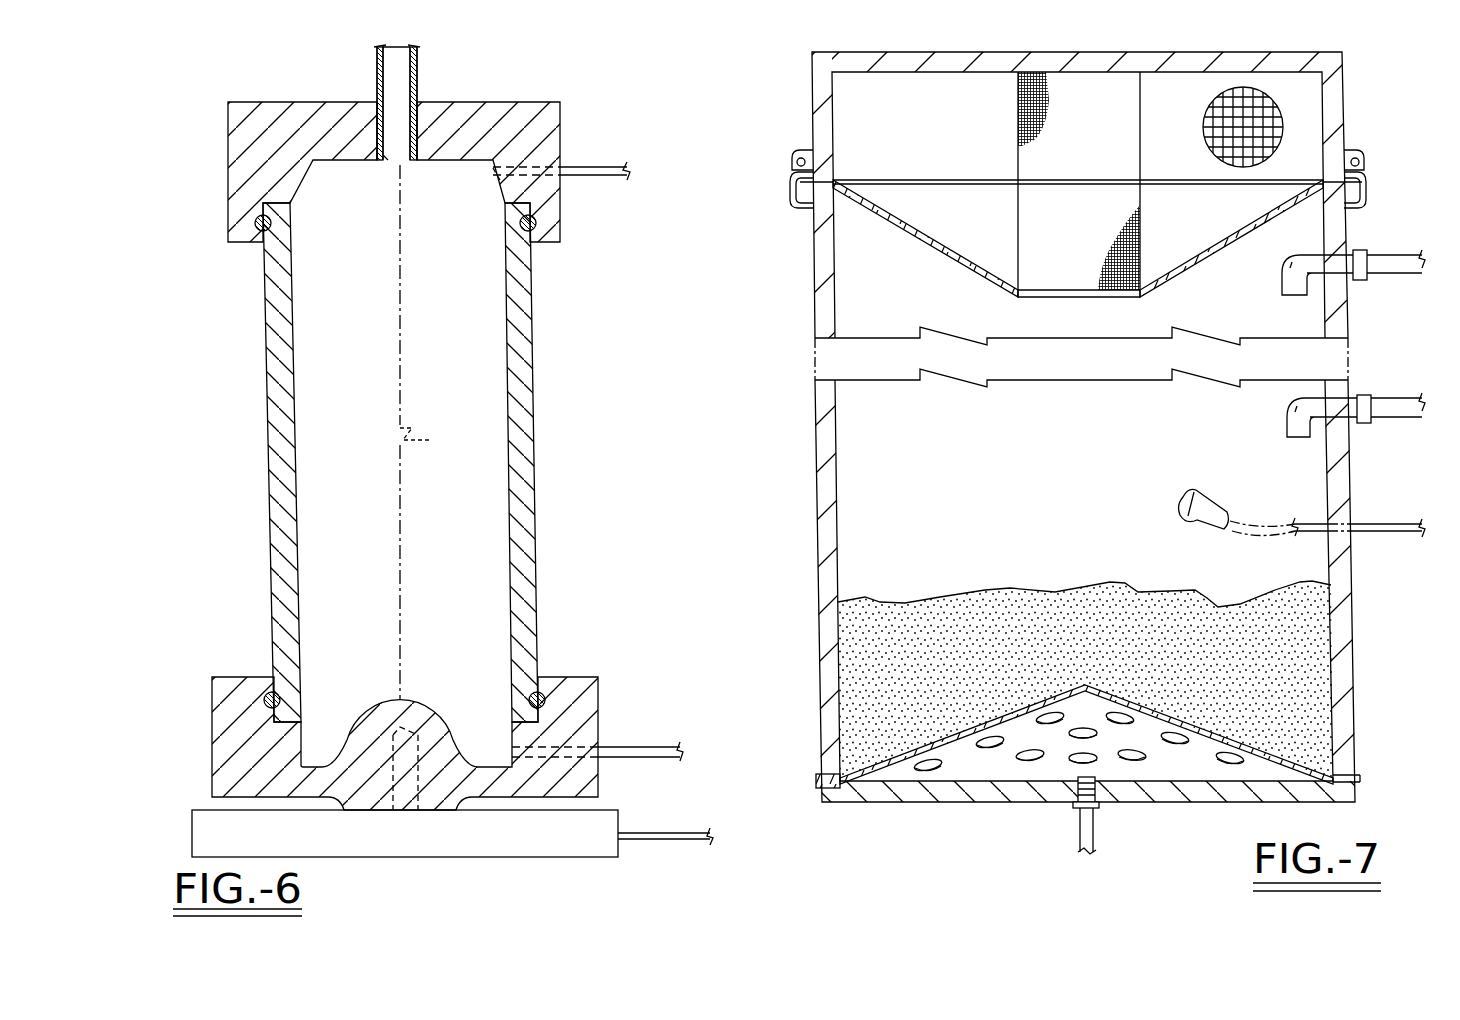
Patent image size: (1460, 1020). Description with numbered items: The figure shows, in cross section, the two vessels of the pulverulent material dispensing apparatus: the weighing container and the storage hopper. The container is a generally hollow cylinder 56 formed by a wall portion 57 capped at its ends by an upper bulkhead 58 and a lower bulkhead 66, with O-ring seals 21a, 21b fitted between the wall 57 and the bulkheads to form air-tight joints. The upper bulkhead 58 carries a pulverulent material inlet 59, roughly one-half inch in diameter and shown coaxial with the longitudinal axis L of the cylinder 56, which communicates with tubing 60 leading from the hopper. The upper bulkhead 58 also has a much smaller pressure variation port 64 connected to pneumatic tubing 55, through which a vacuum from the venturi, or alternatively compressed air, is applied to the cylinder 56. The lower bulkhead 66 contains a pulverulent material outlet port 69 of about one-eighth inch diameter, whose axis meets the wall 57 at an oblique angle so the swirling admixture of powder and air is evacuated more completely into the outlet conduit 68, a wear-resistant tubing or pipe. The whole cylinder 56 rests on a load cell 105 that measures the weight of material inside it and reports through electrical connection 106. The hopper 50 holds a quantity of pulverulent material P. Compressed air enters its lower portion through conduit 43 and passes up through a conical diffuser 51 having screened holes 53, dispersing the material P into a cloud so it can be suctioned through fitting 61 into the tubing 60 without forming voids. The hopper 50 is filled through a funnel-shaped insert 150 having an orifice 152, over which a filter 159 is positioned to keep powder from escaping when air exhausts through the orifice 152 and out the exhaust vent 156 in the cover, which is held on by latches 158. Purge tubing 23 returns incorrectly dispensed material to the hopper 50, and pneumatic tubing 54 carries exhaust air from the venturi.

In FIG. 6, the upper bulkhead 58 is at (312, 102).
In FIG. 6, the tubing 60 is at (407, 74).
In FIG. 7, the tubing 60 is at (1420, 522).
In FIG. 6, the pulverulent material inlet 59 is at (388, 158).
In FIG. 6, the pressure variation port 64 is at (494, 177).
In FIG. 6, the pneumatic tubing 55 is at (622, 178).
In FIG. 6, the O-ring seal 21a is at (254, 226).
In FIG. 6, the O-ring seal 21b is at (265, 693).
In FIG. 6, the cylinder 56 is at (419, 462).
In FIG. 6, the wall portion 57 is at (265, 444).
In FIG. 6, the longitudinal axis L is at (424, 443).
In FIG. 6, the lower bulkhead 66 is at (573, 677).
In FIG. 6, the pulverulent material outlet port 69 is at (510, 752).
In FIG. 6, the outlet conduit 68 is at (646, 747).
In FIG. 6, the load cell 105 is at (425, 849).
In FIG. 6, the electrical connection 106 is at (700, 840).
In FIG. 7, the hopper 50 is at (812, 462).
In FIG. 7, the funnel-shaped insert 150 is at (953, 255).
In FIG. 7, the orifice 152 is at (1094, 298).
In FIG. 7, the filter 159 is at (1017, 130).
In FIG. 7, the exhaust vent 156 is at (1280, 124).
In FIG. 7, the latches 158 is at (790, 188).
In FIG. 7, the purge tubing 23 is at (1421, 254).
In FIG. 7, the pneumatic tubing 54 is at (1410, 398).
In FIG. 7, the fitting 61 is at (1194, 494).
In FIG. 7, the pulverulent material P is at (1000, 590).
In FIG. 7, the diffuser 51 is at (1178, 717).
In FIG. 7, the holes 53 is at (1040, 716).
In FIG. 7, the conduit 43 is at (1078, 830).